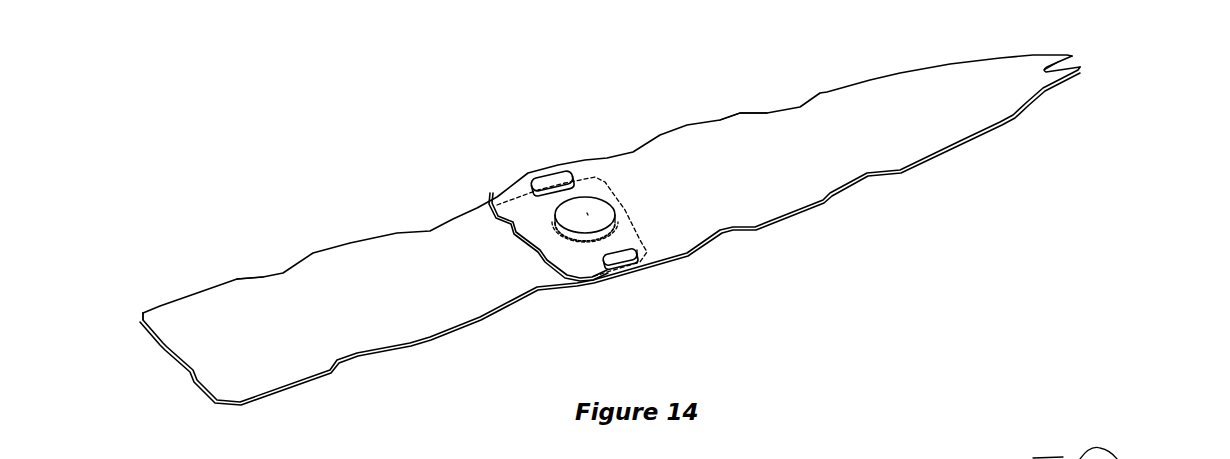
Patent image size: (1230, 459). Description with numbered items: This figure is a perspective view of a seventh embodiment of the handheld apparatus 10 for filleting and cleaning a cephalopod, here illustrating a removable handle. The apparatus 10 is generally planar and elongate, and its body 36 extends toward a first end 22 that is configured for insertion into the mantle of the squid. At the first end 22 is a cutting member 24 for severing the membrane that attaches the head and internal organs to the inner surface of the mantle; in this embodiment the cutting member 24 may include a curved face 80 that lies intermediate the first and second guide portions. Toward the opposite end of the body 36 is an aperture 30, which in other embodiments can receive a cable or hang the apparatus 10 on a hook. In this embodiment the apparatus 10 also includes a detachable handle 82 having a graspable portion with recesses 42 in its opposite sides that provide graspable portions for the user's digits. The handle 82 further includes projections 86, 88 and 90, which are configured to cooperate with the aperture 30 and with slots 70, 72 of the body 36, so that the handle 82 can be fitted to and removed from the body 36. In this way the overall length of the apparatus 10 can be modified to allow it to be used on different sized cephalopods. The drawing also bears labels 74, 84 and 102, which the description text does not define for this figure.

The handheld apparatus 10 is at (377, 82).
The first end 22 is at (1093, 155).
The cutting member 24 is at (1083, 53).
The aperture 30 is at (613, 220).
The body 36 is at (775, 172).
The recesses 42 is at (432, 220).
The slot 70 is at (528, 183).
The slot 72 is at (617, 263).
The fastener 74 is at (1018, 458).
The curved face 80 is at (1047, 75).
The detachable handle 82 is at (222, 180).
The end region 84 is at (360, 303).
The projection 86 is at (547, 173).
The projection 88 is at (587, 213).
The projection 90 is at (637, 254).
The component 102 is at (735, 455).